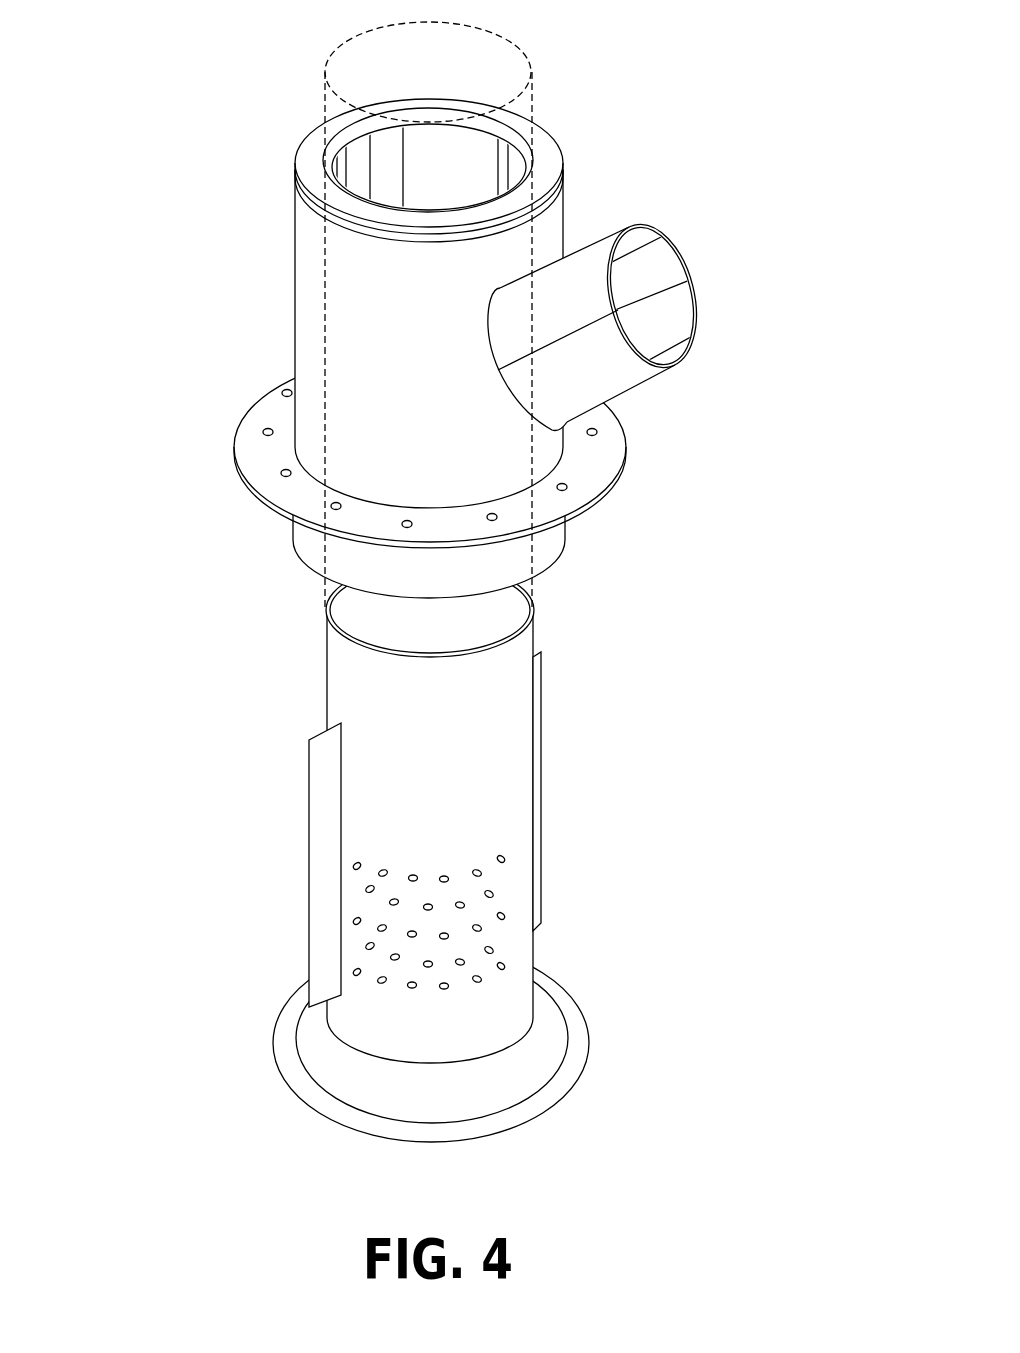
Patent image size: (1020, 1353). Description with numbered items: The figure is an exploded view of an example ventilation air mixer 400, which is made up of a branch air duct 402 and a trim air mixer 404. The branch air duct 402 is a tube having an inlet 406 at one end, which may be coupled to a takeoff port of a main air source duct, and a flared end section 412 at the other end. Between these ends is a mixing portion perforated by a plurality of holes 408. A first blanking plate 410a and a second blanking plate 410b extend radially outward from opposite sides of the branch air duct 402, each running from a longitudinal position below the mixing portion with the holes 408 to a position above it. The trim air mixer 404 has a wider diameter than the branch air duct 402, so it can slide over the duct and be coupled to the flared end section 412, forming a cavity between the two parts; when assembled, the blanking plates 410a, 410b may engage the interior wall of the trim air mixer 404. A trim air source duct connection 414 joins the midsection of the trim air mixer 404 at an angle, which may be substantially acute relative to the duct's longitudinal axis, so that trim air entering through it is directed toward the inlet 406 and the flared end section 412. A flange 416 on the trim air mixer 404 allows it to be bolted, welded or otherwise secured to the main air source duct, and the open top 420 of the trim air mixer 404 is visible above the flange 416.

The ventilation air mixer 400 is at (162, 141).
The branch air duct 402 is at (534, 948).
The trim air mixer 404 is at (294, 298).
The inlet 406 is at (507, 1153).
The plurality of holes 408 is at (518, 883).
The first blanking plate 410a is at (310, 832).
The second blanking plate 410b is at (543, 735).
The flared end section 412 is at (545, 1057).
The trim air source duct connection 414 is at (697, 340).
The flange 416 is at (624, 462).
The top of the trim air mixer 420 is at (558, 152).